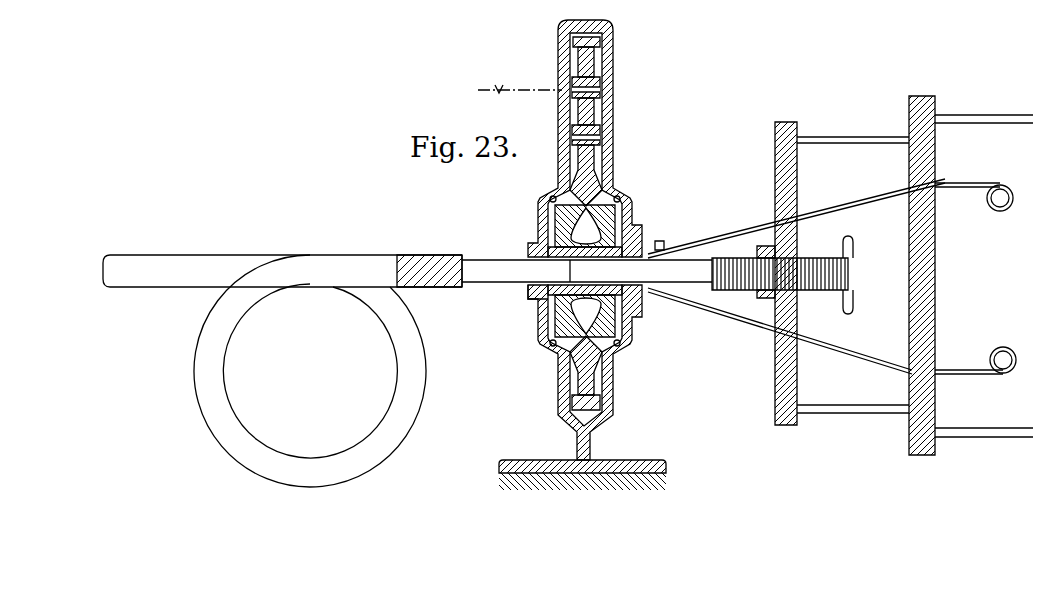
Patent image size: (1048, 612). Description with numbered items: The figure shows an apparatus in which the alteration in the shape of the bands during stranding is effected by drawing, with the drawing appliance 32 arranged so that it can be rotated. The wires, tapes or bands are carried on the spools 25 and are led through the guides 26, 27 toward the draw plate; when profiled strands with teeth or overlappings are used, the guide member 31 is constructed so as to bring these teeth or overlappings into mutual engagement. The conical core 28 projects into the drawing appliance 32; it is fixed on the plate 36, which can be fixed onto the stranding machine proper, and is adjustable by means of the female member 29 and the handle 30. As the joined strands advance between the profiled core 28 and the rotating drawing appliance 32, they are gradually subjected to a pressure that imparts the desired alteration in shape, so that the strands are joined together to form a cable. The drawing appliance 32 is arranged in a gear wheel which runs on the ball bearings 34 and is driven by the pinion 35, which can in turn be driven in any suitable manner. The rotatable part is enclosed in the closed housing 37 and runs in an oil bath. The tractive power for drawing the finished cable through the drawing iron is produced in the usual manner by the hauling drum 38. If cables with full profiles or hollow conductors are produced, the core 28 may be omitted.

The spools 25 is at (1013, 197).
The guide 26 is at (925, 185).
The guide 27 is at (786, 219).
The conical core 28 is at (475, 272).
The female member 29 is at (768, 298).
The handle 30 is at (853, 246).
The guide member 31 is at (661, 241).
The drawing appliance 32 is at (542, 298).
The ball bearings 34 is at (557, 193).
The pinion 35 is at (588, 68).
The plate 36 is at (787, 162).
The closed housing 37 is at (590, 143).
The hauling drum 38 is at (310, 371).